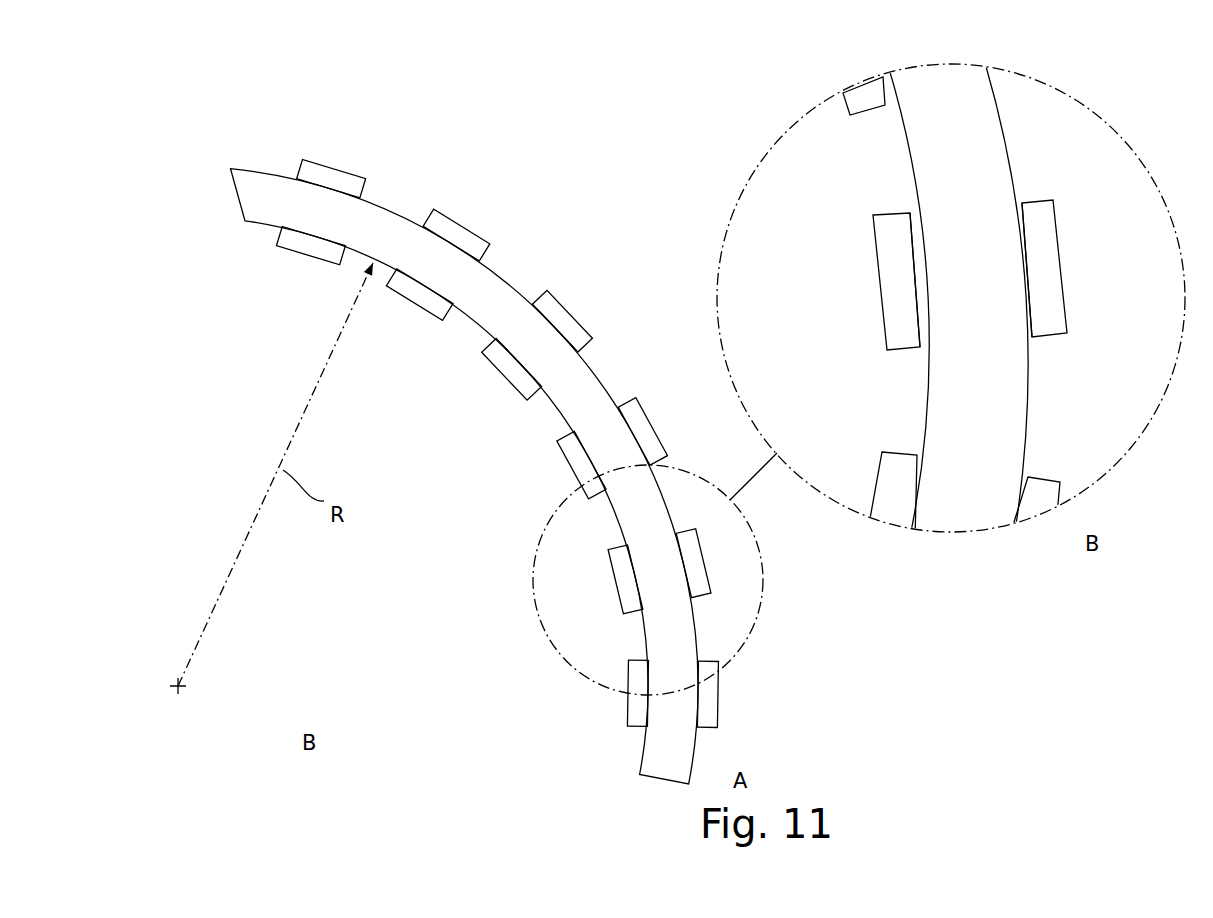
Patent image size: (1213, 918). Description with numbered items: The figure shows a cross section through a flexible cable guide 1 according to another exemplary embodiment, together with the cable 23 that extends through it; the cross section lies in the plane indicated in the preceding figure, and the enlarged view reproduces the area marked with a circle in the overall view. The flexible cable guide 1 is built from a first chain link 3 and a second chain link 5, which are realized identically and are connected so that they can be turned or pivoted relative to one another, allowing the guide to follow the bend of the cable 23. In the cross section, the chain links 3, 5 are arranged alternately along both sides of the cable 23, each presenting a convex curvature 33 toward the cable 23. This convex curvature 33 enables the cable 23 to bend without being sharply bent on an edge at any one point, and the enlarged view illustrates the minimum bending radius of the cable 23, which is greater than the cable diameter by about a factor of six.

In FIG. 11A, the flexible cable guide 1 is at (446, 146).
In FIG. 11A, the first chain link 3 is at (328, 176).
In FIG. 11B, the first chain link 3 is at (907, 300).
In FIG. 11A, the second chain link 5 is at (458, 238).
In FIG. 11B, the second chain link 5 is at (892, 502).
In FIG. 11A, the cable 23 is at (608, 370).
In FIG. 11B, the cable 23 is at (905, 142).
In FIG. 11A, the convex curvature 33 is at (566, 321).
In FIG. 11B, the convex curvature 33 is at (893, 240).